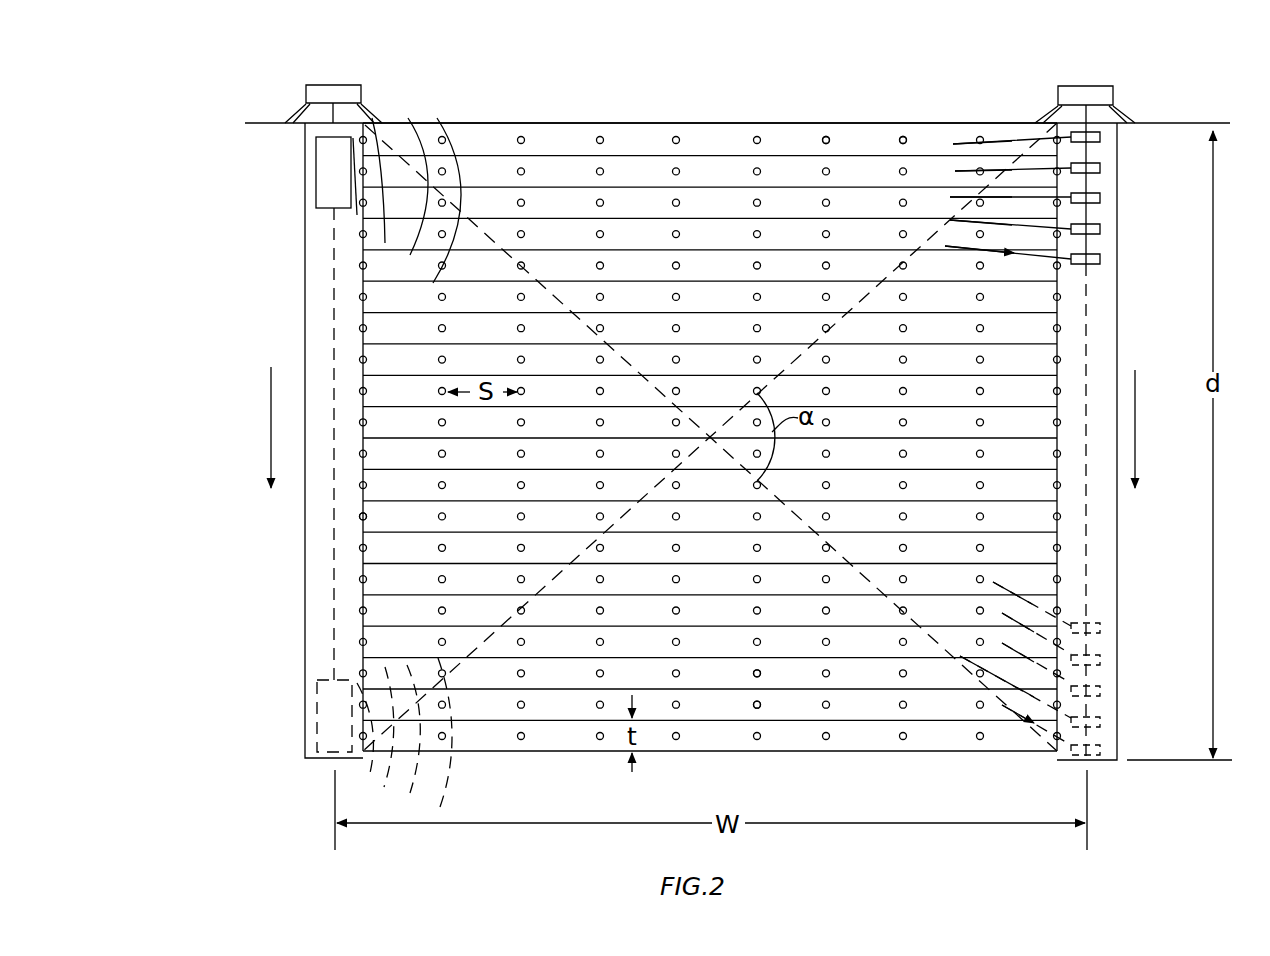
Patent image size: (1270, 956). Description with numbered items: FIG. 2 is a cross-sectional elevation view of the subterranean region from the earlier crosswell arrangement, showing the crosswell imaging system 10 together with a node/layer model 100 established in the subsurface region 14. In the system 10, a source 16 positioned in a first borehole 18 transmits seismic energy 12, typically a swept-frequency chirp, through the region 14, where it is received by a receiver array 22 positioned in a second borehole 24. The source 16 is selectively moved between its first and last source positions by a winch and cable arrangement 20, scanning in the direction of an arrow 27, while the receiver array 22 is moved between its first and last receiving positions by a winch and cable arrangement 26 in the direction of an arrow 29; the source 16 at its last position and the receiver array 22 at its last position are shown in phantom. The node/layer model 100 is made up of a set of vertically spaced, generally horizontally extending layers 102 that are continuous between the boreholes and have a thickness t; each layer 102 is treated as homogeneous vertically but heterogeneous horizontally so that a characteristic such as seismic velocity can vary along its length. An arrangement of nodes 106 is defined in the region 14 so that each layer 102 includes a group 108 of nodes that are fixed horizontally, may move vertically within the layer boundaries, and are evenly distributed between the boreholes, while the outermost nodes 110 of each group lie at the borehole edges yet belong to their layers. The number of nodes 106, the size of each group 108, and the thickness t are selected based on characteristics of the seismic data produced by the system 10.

The crosswell imaging system 10 is at (725, 120).
The seismic energy 12 is at (455, 150).
The subsurface region 14 is at (736, 212).
The source 16 is at (316, 190).
The first borehole 18 is at (305, 262).
The winch and cable arrangement 20 is at (330, 85).
The receiver array 22 is at (1100, 168).
The second borehole 24 is at (1117, 300).
The winch and cable arrangement 26 is at (1100, 86).
The arrow 27 is at (271, 417).
The arrow 29 is at (1140, 446).
The node/layer model 100 is at (546, 123).
The layers 102 is at (662, 752).
The nodes 106 is at (908, 138).
The group of nodes 108 is at (832, 138).
The outermost nodes 110 is at (363, 517).